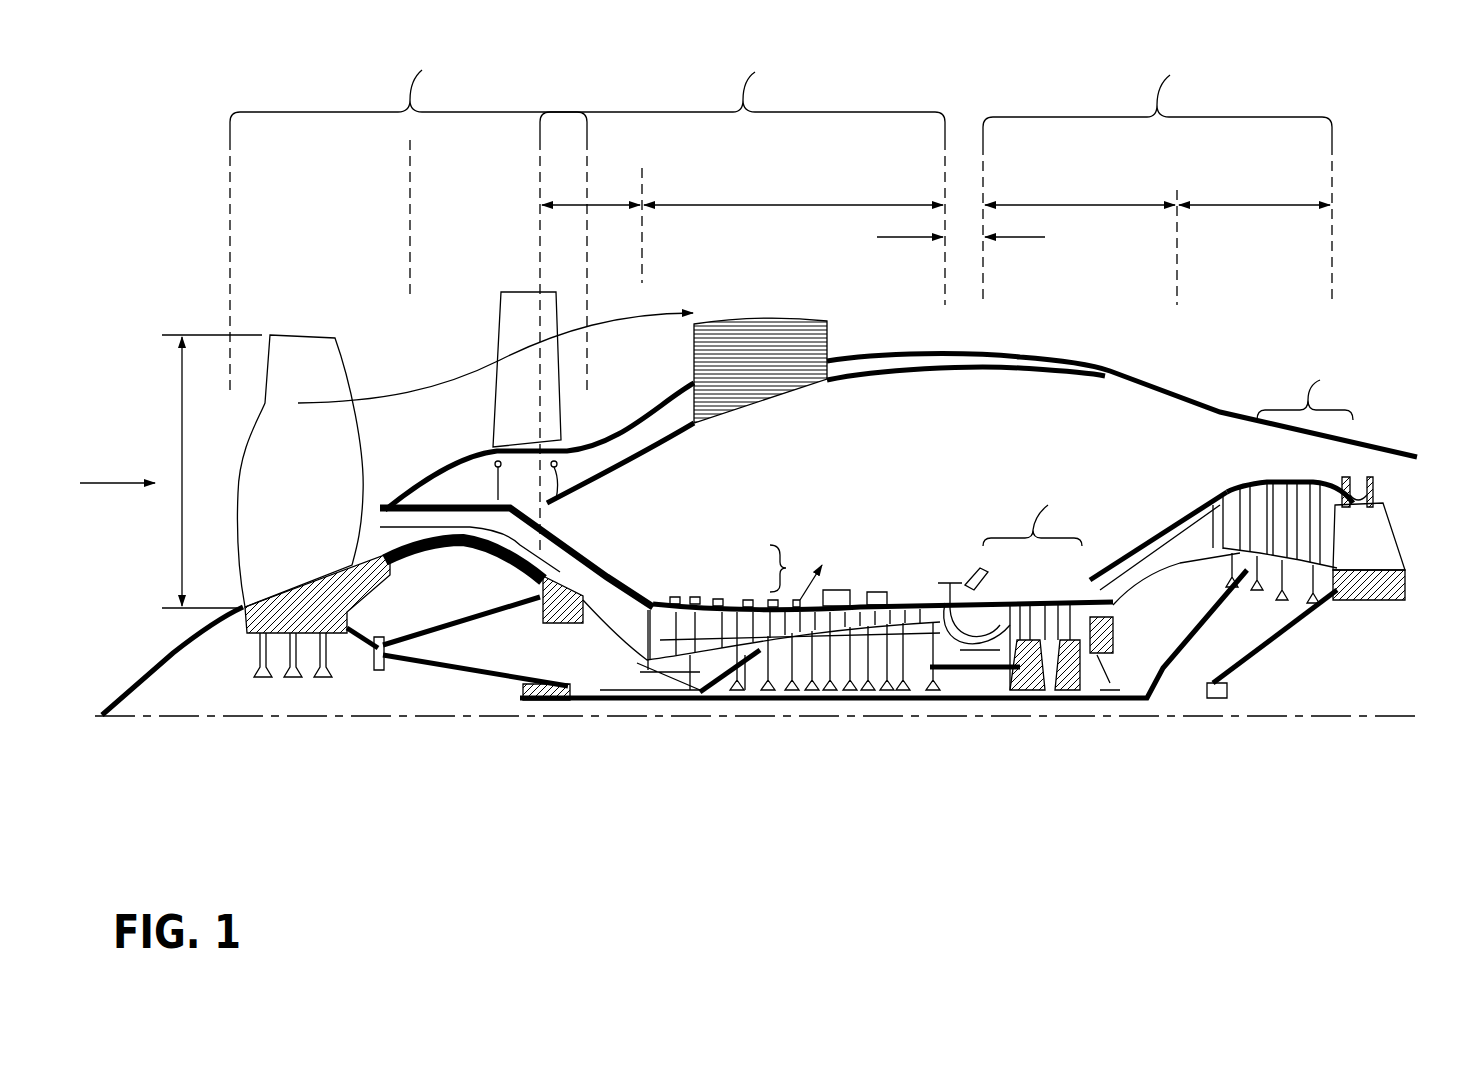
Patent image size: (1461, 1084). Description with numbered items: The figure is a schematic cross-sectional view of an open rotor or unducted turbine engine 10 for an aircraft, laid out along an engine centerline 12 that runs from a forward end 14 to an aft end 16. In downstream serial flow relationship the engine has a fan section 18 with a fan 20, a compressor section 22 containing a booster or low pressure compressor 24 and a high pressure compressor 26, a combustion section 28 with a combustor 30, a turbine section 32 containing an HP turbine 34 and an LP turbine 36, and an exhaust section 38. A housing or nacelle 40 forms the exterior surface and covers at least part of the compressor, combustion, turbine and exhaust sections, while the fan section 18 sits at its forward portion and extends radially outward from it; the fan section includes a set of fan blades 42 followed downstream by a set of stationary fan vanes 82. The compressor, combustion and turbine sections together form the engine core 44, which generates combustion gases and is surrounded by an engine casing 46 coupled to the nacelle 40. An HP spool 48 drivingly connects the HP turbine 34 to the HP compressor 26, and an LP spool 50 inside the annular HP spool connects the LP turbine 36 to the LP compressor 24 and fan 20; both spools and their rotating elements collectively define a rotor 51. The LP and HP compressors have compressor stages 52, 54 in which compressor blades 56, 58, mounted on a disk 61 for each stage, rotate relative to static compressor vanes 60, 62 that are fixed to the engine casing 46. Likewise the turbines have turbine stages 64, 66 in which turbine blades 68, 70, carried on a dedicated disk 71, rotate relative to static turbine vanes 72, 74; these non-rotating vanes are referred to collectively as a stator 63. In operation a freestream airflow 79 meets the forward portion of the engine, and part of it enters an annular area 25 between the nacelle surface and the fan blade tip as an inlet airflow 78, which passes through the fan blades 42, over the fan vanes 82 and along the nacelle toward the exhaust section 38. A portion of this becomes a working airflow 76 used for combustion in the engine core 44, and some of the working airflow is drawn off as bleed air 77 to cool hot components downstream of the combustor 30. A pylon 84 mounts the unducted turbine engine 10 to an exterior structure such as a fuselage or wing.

The unducted turbine engine 10 is at (1347, 235).
The engine centerline 12 is at (225, 717).
The forward end 14 is at (100, 432).
The aft end 16 is at (1398, 536).
The fan section 18 is at (408, 227).
The fan 20 is at (365, 312).
The compressor section 22 is at (742, 305).
The low pressure compressor 24 is at (585, 205).
The annular area 25 is at (184, 470).
The high pressure compressor 26 is at (777, 205).
The combustion section 28 is at (892, 237).
The combustor 30 is at (980, 593).
The turbine section 32 is at (1157, 182).
The HP turbine 34 is at (1080, 205).
The LP turbine 36 is at (1250, 205).
The exhaust section 38 is at (1400, 513).
The nacelle 40 is at (1213, 412).
The fan blades 42 is at (320, 380).
The engine core 44 is at (907, 488).
The engine casing 46 is at (1160, 527).
The HP spool 48 is at (948, 670).
The LP spool 50 is at (548, 705).
The rotor 51 is at (808, 703).
The compressor stages 52 is at (655, 565).
The compressor stages 54 is at (780, 545).
The compressor blades 56 is at (578, 563).
The compressor blades 58 is at (711, 601).
The static compressor vanes 60 is at (564, 555).
The disk 61 is at (710, 702).
The static compressor vanes 62 is at (684, 597).
The stator 63 is at (675, 695).
The turbine stages 64 is at (1032, 520).
The turbine stages 66 is at (1308, 394).
The turbine blades 68 is at (1027, 587).
The turbine blades 70 is at (1313, 485).
The disk 71 is at (1040, 695).
The static turbine vanes 72 is at (1025, 587).
The static turbine vanes 74 is at (1303, 483).
The working airflow 76 is at (525, 545).
The bleed air 77 is at (826, 562).
The inlet airflow 78 is at (493, 353).
The freestream airflow 79 is at (118, 488).
The stationary fan vanes 82 is at (503, 389).
The pylon 84 is at (757, 320).